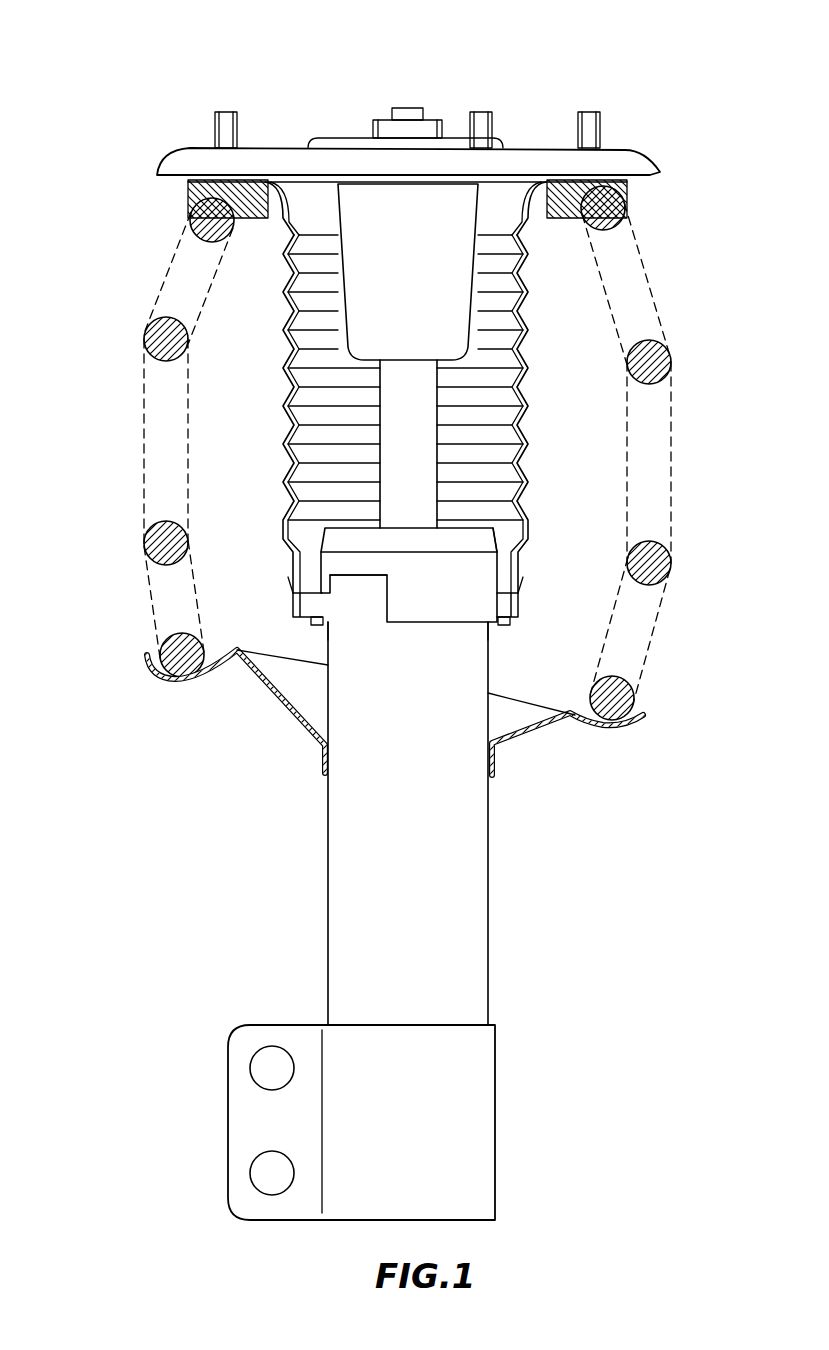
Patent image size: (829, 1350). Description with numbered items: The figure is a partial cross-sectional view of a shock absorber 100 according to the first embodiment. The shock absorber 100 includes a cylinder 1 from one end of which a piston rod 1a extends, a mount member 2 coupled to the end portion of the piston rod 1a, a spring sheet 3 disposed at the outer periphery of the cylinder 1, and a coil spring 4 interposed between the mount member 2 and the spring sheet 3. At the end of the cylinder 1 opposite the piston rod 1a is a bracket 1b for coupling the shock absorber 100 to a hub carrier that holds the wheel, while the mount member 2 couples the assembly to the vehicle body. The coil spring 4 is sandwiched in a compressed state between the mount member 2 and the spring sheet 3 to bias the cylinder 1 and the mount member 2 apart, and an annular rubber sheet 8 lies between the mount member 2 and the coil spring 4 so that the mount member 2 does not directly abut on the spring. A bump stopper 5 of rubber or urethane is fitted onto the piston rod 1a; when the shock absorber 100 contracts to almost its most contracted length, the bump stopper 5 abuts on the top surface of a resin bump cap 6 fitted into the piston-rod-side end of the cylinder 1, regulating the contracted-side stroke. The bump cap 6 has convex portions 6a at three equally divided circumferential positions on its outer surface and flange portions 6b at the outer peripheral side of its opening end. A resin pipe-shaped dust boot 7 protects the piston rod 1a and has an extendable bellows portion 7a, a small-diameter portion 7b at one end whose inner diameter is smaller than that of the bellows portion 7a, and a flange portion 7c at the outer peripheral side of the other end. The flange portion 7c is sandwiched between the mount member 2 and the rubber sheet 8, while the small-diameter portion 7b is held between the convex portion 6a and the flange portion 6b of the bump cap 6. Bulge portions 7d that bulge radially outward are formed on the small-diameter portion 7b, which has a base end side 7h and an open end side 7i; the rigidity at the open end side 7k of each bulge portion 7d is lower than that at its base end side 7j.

The shock absorber 100 is at (135, 95).
The cylinder 1 is at (488, 928).
The piston rod 1a is at (437, 452).
The bracket 1b is at (228, 1055).
The mount member 2 is at (632, 150).
The spring sheet 3 is at (538, 733).
The coil spring 4 is at (672, 572).
The bump stopper 5 is at (338, 290).
The bump cap 6 is at (411, 628).
The convex portion 6a is at (343, 583).
The flange portion 6b is at (310, 632).
The dust boot 7 is at (400, 440).
The bellows portion 7a is at (285, 477).
The small-diameter portion 7b is at (514, 619).
The flange portion 7c is at (238, 217).
The bulge portion 7d is at (292, 603).
The base end side 7h is at (510, 604).
The open end side 7i is at (512, 627).
The base end side of bulge portion 7j is at (296, 591).
The open end side of bulge portion 7k is at (296, 620).
The rubber sheet 8 is at (188, 205).